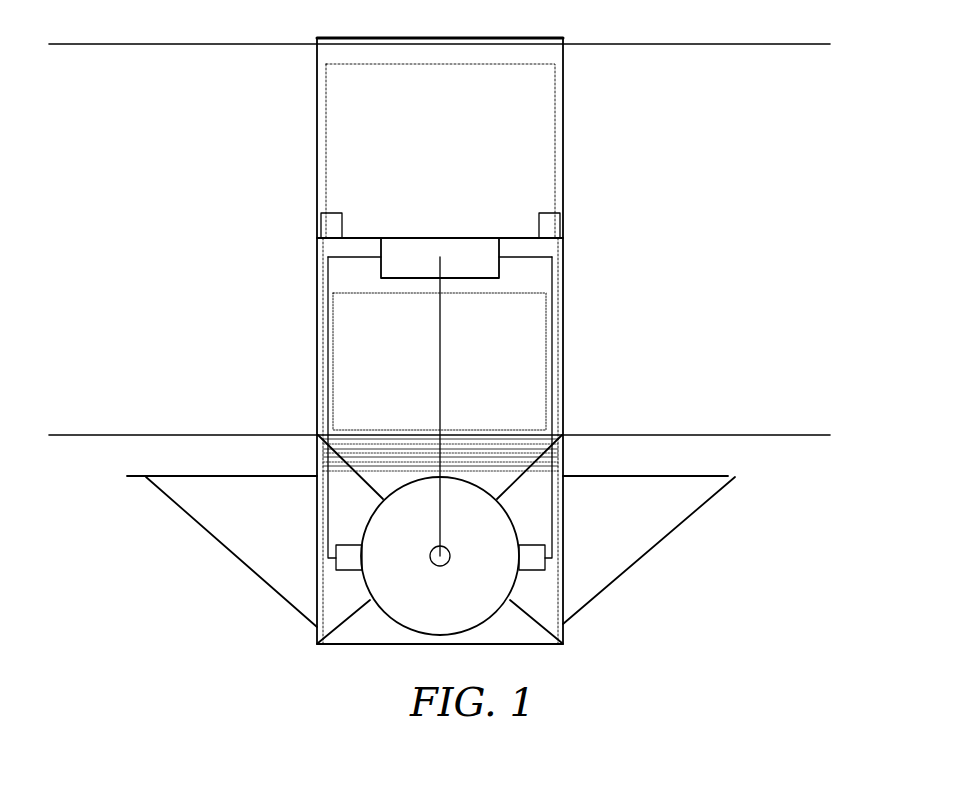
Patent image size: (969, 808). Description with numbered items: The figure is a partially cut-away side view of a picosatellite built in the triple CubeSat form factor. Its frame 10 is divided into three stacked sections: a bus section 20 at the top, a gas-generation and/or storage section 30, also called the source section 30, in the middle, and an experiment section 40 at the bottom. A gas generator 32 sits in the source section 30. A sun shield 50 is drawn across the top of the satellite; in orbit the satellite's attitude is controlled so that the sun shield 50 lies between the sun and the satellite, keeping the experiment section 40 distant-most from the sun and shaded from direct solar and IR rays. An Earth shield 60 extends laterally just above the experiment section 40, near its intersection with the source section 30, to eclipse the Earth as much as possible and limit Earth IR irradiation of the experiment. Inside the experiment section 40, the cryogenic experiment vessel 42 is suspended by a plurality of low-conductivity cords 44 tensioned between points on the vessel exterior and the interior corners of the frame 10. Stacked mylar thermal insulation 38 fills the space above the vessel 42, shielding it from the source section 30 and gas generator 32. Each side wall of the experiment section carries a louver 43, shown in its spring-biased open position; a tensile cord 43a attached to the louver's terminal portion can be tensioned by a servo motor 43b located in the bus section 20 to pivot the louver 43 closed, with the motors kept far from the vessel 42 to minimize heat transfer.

The frame 10 is at (268, 168).
The bus section 20 is at (565, 118).
The gas-generation and/or storage section 30 is at (565, 340).
The gas generator 32 is at (484, 392).
The thermal insulation 38 is at (343, 448).
The experiment section 40 is at (565, 516).
The experiment vessel 42 is at (453, 607).
The louver 43 is at (215, 475).
The tensile cord 43a is at (201, 528).
The servo motor 43b is at (335, 213).
The low-conductivity cords 44 is at (372, 490).
The sun shield 50 is at (155, 46).
The Earth shield 60 is at (87, 437).